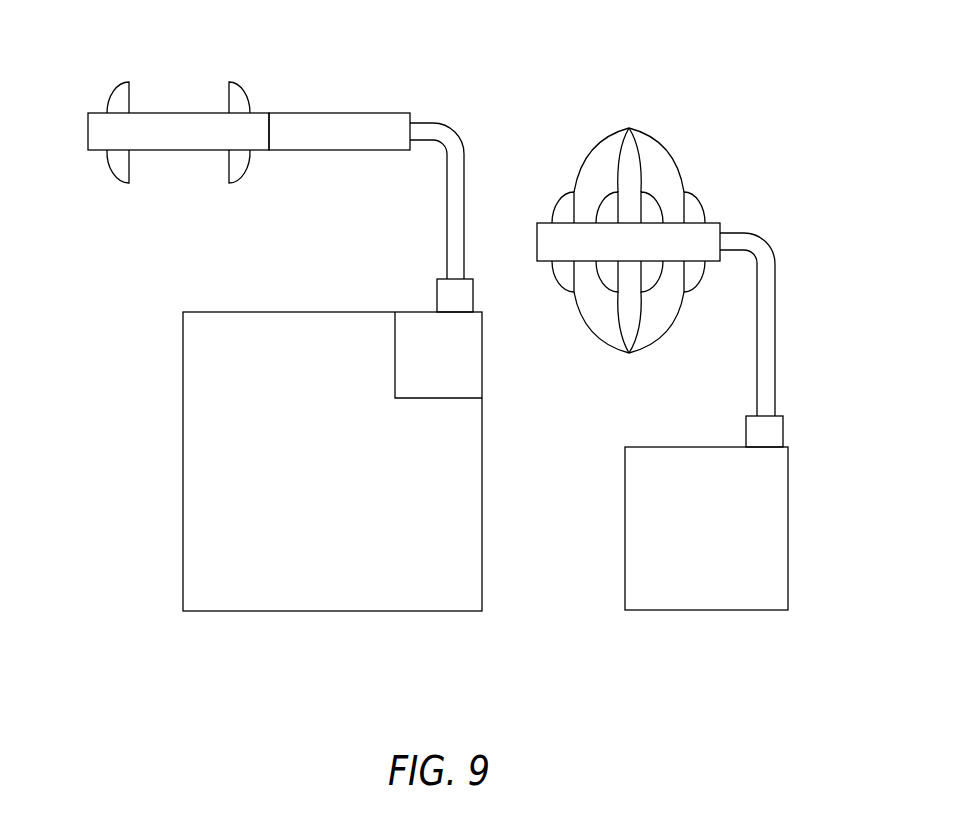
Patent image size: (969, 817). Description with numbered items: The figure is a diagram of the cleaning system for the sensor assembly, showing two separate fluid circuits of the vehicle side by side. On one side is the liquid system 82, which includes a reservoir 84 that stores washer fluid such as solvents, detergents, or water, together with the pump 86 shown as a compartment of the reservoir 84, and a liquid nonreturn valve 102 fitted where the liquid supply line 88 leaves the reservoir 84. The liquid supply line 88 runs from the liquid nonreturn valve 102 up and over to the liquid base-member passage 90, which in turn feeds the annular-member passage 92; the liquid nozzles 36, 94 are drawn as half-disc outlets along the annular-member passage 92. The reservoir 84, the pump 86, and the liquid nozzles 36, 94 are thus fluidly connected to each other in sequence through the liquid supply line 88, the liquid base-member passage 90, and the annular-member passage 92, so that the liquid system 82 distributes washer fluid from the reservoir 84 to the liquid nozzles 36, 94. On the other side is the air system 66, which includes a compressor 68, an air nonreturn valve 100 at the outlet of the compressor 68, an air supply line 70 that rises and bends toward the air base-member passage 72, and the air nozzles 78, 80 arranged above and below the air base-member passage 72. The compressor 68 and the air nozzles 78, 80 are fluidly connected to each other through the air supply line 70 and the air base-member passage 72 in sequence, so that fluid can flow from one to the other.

The liquid nozzle 36 is at (110, 95).
The air system 66 is at (727, 148).
The compressor 68 is at (790, 480).
The air supply line 70 is at (775, 338).
The air base-member passage 72 is at (723, 226).
The air nozzle 78 is at (629, 147).
The air nozzle 80 is at (629, 341).
The liquid system 82 is at (332, 58).
The reservoir 84 is at (183, 362).
The pump 86 is at (452, 398).
The liquid supply line 88 is at (464, 165).
The liquid base-member passage 90 is at (337, 150).
The annular-member passage 92 is at (177, 113).
The liquid nozzle 94 is at (227, 95).
The air nonreturn valve 100 is at (785, 426).
The liquid nonreturn valve 102 is at (473, 290).